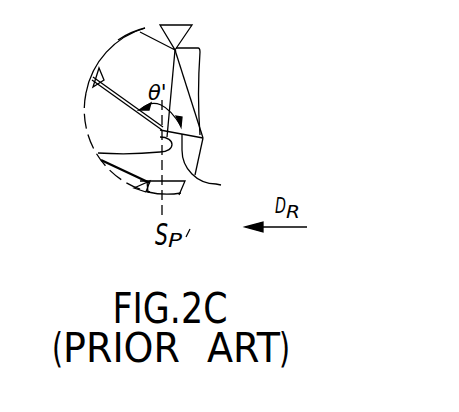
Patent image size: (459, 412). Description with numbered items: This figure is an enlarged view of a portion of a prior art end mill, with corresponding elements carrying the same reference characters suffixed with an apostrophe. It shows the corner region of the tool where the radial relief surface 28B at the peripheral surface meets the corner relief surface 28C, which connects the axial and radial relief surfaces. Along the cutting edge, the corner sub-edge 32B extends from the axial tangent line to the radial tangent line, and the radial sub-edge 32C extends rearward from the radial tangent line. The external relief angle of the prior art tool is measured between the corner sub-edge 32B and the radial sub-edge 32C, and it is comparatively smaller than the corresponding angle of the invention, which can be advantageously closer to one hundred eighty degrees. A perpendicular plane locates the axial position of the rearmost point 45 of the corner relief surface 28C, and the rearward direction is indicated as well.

The radial sub-edge 32C is at (107, 71).
The radial relief surface 28B is at (158, 76).
The corner relief surface 28C is at (196, 98).
The corner sub-edge 32B is at (197, 132).
The rearmost point 45 is at (178, 168).